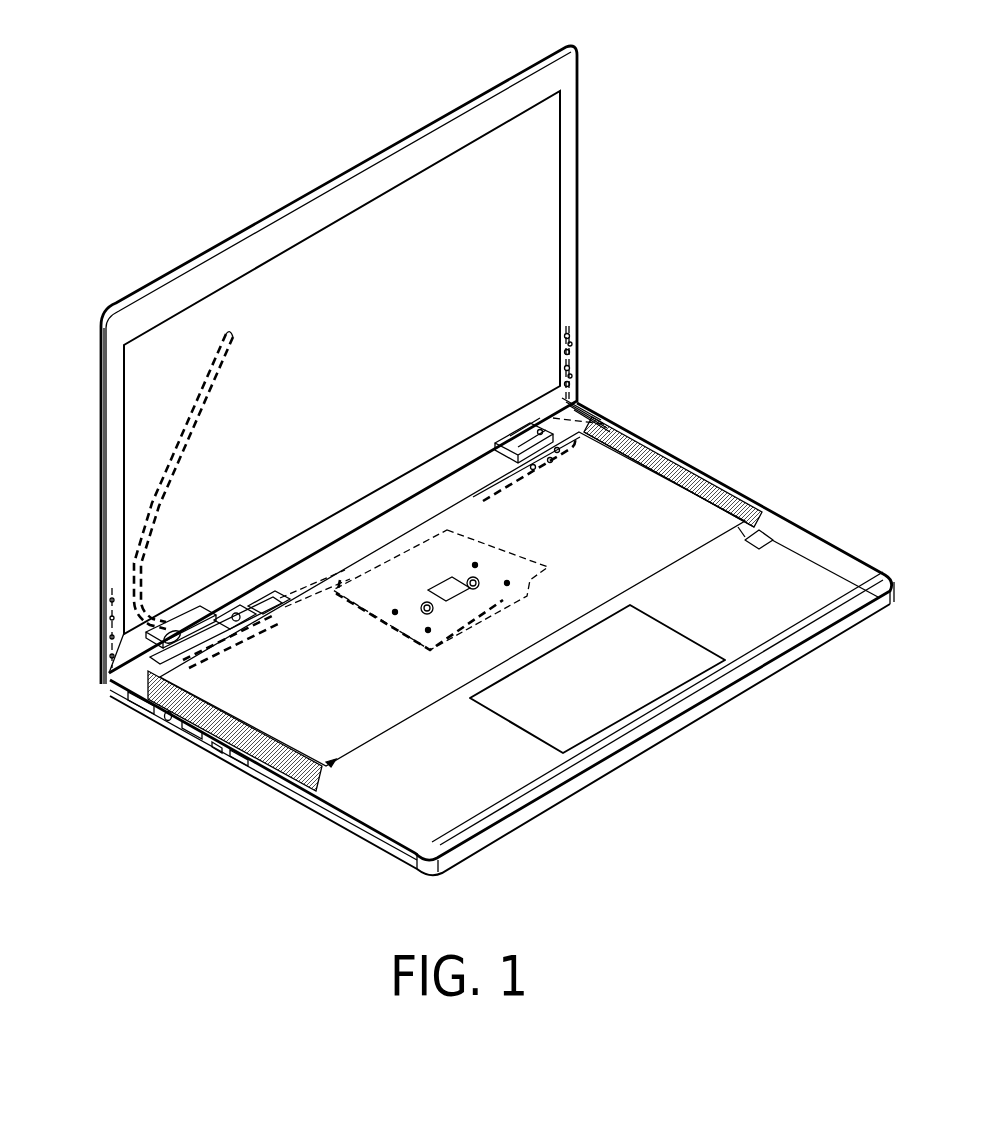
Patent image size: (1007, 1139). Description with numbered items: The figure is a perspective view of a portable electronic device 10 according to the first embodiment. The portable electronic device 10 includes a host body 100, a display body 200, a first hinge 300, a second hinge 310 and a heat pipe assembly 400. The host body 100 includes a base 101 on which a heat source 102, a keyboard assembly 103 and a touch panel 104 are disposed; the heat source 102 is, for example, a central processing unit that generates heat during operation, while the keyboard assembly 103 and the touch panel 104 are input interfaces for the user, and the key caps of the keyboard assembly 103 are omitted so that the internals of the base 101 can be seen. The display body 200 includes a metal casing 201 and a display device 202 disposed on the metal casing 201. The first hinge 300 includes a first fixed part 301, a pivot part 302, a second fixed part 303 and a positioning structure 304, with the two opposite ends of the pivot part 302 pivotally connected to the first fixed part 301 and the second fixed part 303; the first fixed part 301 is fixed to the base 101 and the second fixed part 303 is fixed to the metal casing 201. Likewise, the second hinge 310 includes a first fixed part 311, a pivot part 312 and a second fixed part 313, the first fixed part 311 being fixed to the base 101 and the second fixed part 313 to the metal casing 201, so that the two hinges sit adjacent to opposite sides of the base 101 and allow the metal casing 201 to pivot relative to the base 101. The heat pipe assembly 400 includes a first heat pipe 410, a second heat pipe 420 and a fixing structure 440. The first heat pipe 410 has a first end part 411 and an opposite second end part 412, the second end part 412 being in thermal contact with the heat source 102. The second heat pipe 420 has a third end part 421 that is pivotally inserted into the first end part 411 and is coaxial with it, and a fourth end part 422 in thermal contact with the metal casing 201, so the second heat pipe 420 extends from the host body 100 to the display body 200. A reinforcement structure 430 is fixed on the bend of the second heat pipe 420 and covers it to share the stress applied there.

The portable electronic device 10 is at (71, 66).
The host body 100 is at (758, 500).
The base 101 is at (577, 777).
The heat source 102 is at (537, 575).
The keyboard assembly 103 is at (683, 515).
The touch panel 104 is at (687, 662).
The display body 200 is at (662, 100).
The metal casing 201 is at (568, 165).
The display device 202 is at (545, 121).
The first hinge 300 is at (64, 755).
The first fixed part 301 is at (243, 767).
The pivot part 302 is at (190, 725).
The second fixed part 303 is at (157, 710).
The positioning structure 304 is at (213, 657).
The second hinge 310 is at (752, 323).
The first fixed part 311 is at (570, 420).
The pivot part 312 is at (525, 428).
The second fixed part 313 is at (555, 390).
The heat pipe assembly 400 is at (318, 548).
The first heat pipe 410 is at (308, 612).
The first end part 411 is at (278, 612).
The second end part 412 is at (425, 645).
The second heat pipe 420 is at (200, 425).
The third end part 421 is at (257, 590).
The fourth end part 422 is at (232, 338).
The reinforcement structure 430 is at (188, 640).
The fixing structure 440 is at (235, 618).